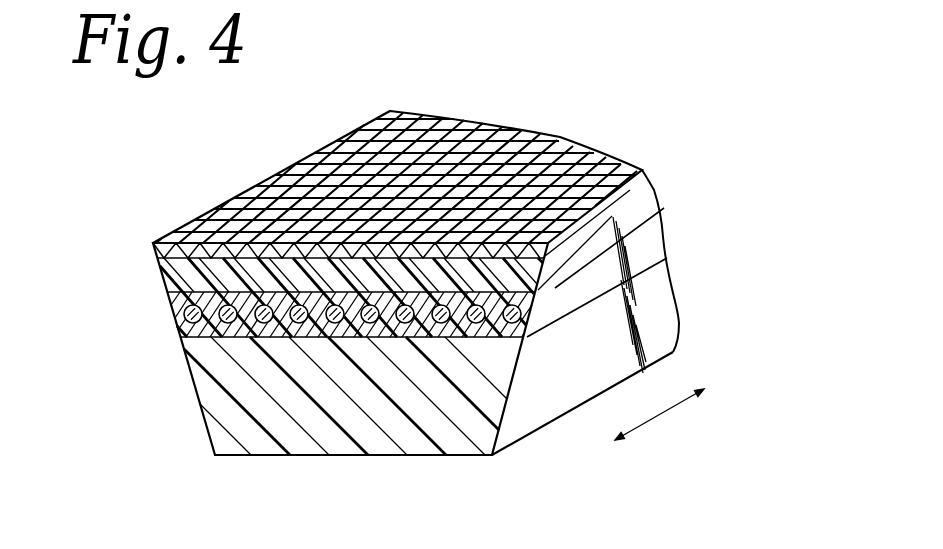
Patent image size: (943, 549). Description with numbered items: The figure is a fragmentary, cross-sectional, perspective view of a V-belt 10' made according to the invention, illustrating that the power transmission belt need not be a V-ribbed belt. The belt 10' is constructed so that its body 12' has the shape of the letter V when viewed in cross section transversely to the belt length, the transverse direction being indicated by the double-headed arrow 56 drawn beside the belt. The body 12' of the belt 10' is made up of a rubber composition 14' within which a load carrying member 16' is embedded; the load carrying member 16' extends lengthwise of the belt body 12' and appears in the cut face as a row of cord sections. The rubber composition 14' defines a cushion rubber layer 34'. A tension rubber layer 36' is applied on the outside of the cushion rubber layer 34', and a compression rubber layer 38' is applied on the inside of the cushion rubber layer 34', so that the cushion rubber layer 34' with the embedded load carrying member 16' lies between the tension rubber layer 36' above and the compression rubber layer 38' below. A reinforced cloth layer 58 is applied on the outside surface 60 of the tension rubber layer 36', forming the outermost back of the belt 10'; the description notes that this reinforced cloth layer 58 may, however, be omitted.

The V-belt 10' is at (398, 253).
The body 12' is at (656, 290).
The rubber composition 14' is at (631, 310).
The load carrying member 16' is at (351, 228).
The cushion rubber layer 34' is at (437, 168).
The tension rubber layer 36' is at (351, 194).
The compression rubber layer 38' is at (345, 435).
The double-headed arrow 56 is at (678, 402).
The reinforced cloth layer 58 is at (293, 197).
The outside surface 60 is at (463, 247).